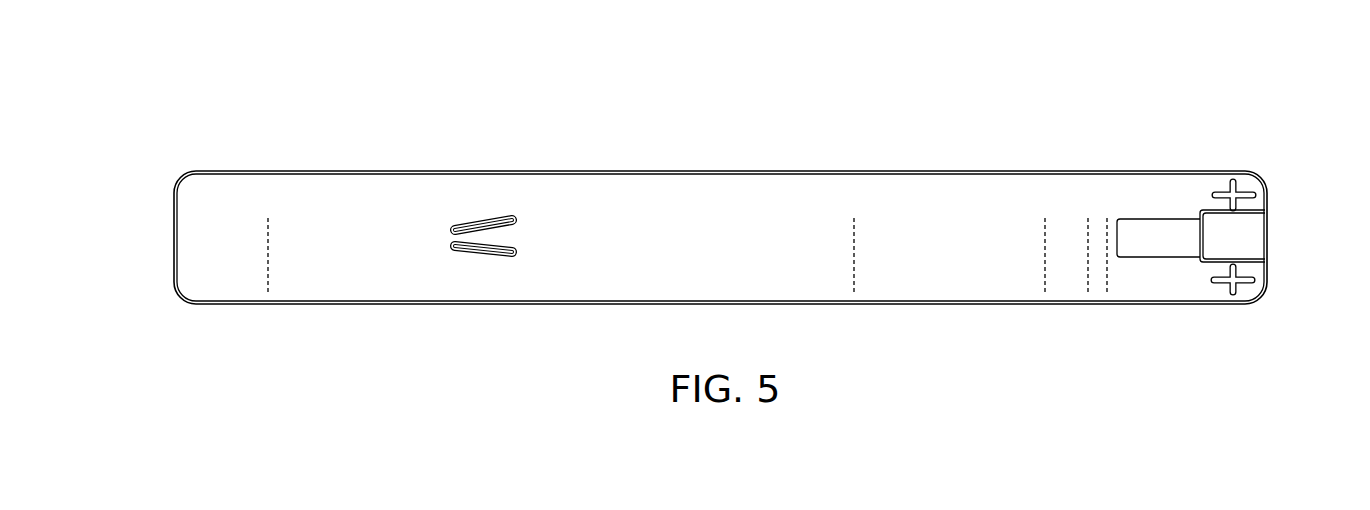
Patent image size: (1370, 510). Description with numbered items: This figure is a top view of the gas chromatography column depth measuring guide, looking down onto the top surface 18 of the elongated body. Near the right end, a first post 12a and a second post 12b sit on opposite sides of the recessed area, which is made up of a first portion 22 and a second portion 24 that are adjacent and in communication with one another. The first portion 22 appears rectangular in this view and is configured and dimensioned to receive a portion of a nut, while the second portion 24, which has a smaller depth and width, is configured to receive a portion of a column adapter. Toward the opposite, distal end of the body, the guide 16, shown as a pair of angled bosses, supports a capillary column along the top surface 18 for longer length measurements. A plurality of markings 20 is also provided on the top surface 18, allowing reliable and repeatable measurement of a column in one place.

The first post 12a is at (1240, 189).
The second post 12b is at (1243, 283).
The guide 16 is at (466, 224).
The top surface 18 is at (694, 218).
The markings 20 is at (265, 185).
The first portion 22 is at (1251, 226).
The second portion 24 is at (1137, 240).